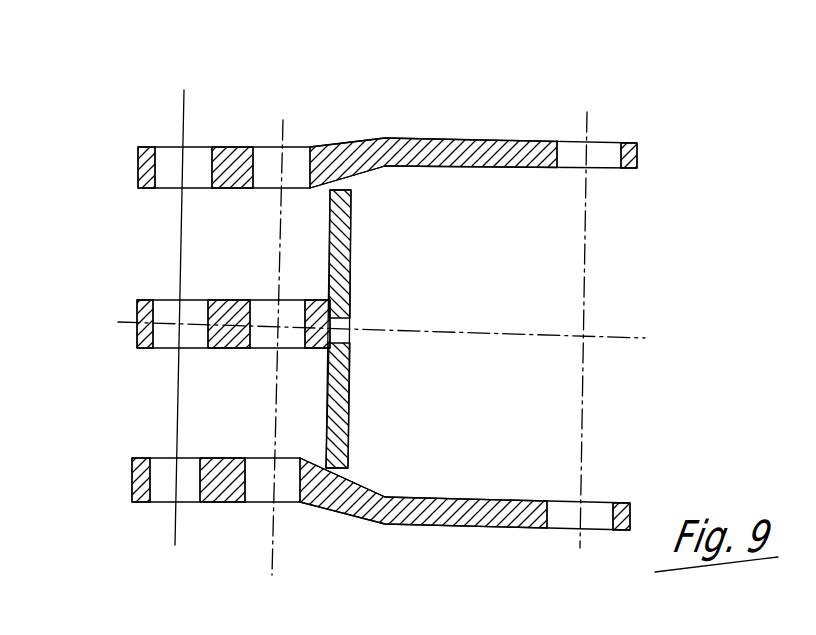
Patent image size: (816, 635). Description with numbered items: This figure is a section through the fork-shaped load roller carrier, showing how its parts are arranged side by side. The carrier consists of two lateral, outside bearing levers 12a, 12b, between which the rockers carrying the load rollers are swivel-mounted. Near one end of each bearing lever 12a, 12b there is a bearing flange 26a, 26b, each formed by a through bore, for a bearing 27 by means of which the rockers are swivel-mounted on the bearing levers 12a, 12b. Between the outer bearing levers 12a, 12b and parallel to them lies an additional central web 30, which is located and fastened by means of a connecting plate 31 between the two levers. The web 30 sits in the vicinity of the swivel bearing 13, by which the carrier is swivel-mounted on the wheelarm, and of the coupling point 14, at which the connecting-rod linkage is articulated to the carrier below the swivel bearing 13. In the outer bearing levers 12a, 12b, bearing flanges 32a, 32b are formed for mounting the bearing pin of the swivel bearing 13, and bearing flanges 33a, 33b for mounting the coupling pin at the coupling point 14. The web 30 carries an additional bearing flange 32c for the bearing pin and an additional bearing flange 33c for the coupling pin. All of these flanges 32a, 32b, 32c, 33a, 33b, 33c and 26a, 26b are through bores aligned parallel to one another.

The bearing lever 12a is at (335, 127).
The bearing lever 12b is at (331, 523).
The swivel bearing 13 is at (201, 110).
The coupling point 14 is at (288, 543).
The bearing flange 26a is at (562, 160).
The bearing flange 26b is at (557, 515).
The bearing 27 is at (593, 112).
The central web 30 is at (245, 326).
The connecting plate 31 is at (352, 272).
The bearing flange 32a is at (148, 180).
The bearing flange 32b is at (142, 480).
The bearing flange 32c is at (142, 342).
The bearing flange 33a is at (268, 170).
The bearing flange 33b is at (246, 490).
The bearing flange 33c is at (313, 318).